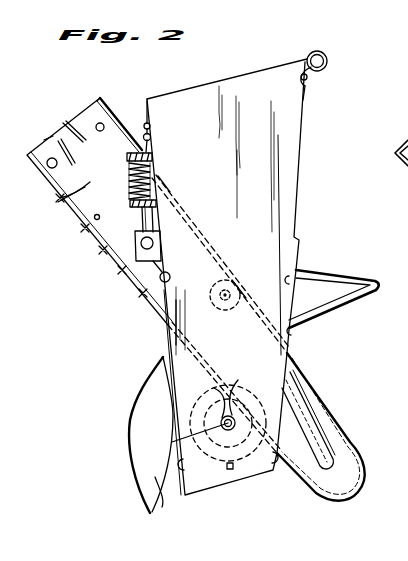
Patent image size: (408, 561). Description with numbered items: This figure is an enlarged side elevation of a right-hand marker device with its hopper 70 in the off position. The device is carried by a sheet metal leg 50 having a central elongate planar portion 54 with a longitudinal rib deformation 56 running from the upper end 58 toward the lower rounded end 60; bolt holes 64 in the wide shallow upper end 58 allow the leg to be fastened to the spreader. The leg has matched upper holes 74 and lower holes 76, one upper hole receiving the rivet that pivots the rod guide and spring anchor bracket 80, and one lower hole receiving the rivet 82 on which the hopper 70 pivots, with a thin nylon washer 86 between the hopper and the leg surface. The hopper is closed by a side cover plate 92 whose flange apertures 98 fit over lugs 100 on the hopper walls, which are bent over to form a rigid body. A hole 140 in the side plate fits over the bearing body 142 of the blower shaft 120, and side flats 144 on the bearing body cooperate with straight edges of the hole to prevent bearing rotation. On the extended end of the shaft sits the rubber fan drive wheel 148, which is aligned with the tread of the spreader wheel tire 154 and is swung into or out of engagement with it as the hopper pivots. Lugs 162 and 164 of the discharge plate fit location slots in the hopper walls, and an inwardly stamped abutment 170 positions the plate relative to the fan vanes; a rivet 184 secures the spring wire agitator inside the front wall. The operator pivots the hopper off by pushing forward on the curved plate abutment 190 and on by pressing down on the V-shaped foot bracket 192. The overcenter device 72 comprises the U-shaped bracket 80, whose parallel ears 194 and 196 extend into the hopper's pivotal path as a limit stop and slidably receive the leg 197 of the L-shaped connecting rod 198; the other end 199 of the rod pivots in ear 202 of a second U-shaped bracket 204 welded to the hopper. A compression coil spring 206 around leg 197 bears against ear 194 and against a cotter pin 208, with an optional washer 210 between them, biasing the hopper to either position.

The leg 50 is at (141, 293).
The central elongate planar portion 54 is at (120, 270).
The longitudinal rib deformation 56 is at (63, 205).
The upper end 58 is at (52, 158).
The lower rounded end 60 is at (334, 435).
The bolt holes 64 is at (98, 100).
The hopper 70 is at (296, 150).
The overcenter device 72 is at (190, 196).
The upper holes 74 is at (96, 219).
The lowermost hole 76 is at (193, 323).
The rod guide and spring anchor bracket 80 is at (146, 217).
The rivet 82 is at (240, 286).
The plastic washer 86 is at (228, 283).
The side cover plate 92 is at (258, 82).
The apertures 98 is at (305, 84).
The lugs 100 is at (308, 75).
The blower shaft 120 is at (184, 437).
The aligned hole 140 is at (227, 430).
The bearing body 142 is at (202, 396).
The side flats 144 is at (246, 388).
The fan drive wheel 148 is at (186, 466).
The rubber tire 154 is at (164, 508).
The lug 162 is at (172, 410).
The lug 164 is at (283, 405).
The inwardly stamped abutment 170 is at (231, 470).
The rivet 184 is at (151, 136).
The curved plate abutment 190 is at (322, 52).
The foot bracket 192 is at (330, 273).
The bracket ear 194 is at (125, 161).
The bracket ear 196 is at (166, 219).
The slidable leg 197 is at (132, 155).
The L-shaped connecting rod 198 is at (150, 222).
The other end 199 is at (115, 238).
The ear 202 is at (168, 275).
The second U-shaped bracket 204 is at (162, 244).
The compression coil spring 206 is at (150, 183).
The cotter pin 208 is at (131, 203).
The washer 210 is at (132, 183).